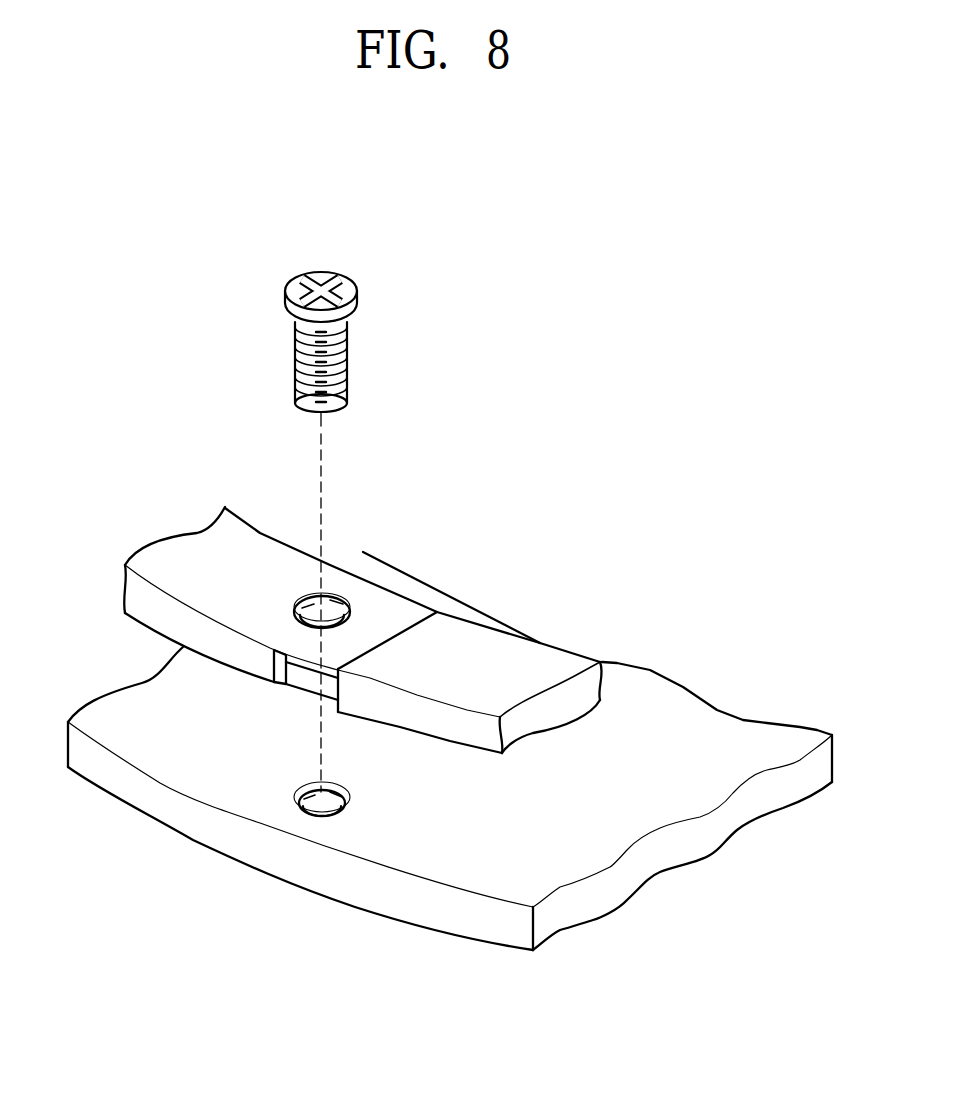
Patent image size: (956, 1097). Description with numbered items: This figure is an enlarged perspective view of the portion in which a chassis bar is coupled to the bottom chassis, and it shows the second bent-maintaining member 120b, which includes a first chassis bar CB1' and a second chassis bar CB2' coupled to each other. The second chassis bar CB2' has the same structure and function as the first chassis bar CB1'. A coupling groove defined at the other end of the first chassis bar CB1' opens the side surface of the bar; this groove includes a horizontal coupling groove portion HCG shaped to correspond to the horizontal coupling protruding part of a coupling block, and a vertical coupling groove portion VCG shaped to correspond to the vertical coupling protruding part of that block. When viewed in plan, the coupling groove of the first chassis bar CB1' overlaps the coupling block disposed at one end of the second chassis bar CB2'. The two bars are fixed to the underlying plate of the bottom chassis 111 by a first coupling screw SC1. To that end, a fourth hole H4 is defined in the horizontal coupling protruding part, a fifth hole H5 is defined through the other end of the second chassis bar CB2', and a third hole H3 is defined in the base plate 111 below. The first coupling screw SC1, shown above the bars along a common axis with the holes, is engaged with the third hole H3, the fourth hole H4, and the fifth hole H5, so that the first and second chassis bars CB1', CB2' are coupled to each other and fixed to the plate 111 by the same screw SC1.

The second bent-maintaining member 120b is at (655, 279).
The first coupling screw SC1 is at (359, 301).
The first chassis bar CB1' is at (362, 577).
The second chassis bar CB2' is at (470, 645).
The vertical coupling groove portion VCG is at (265, 656).
The horizontal coupling groove portion HCG is at (322, 683).
The fourth hole H4 is at (329, 613).
The fifth hole H5 is at (340, 615).
The base plate 111 is at (183, 808).
The third hole H3 is at (302, 792).